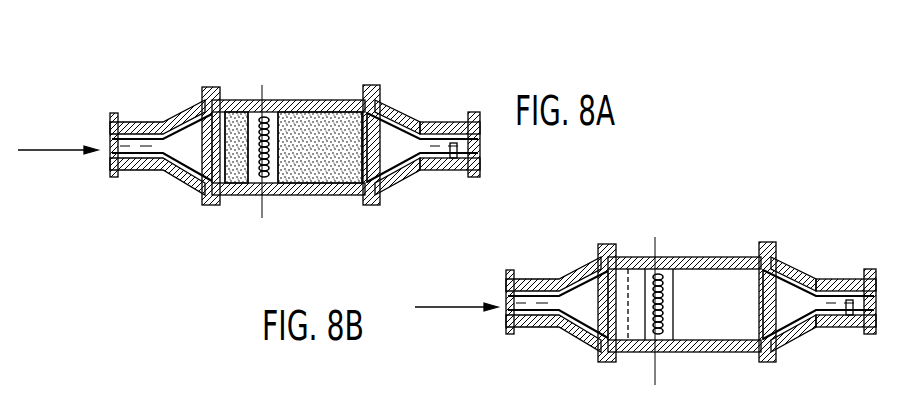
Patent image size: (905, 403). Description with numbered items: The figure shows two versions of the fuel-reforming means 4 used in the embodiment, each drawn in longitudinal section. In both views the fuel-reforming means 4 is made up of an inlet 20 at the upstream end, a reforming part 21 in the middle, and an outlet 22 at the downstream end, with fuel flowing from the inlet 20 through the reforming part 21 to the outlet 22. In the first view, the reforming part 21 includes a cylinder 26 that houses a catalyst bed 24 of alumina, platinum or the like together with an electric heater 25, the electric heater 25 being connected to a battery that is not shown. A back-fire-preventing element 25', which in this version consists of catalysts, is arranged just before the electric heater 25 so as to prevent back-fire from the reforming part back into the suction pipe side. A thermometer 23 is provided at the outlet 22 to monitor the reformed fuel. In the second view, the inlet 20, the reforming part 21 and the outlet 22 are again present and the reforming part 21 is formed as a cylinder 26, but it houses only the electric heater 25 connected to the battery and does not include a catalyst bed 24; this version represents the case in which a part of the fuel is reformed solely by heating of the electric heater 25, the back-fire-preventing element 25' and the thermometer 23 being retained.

In FIG. 8A, the fuel-reforming means 4 is at (243, 76).
In FIG. 8B, the fuel-reforming means 4 is at (638, 296).
In FIG. 8A, the inlet 20 is at (150, 176).
In FIG. 8B, the inlet 20 is at (557, 309).
In FIG. 8A, the reforming part 21 is at (308, 198).
In FIG. 8B, the reforming part 21 is at (679, 315).
In FIG. 8A, the outlet 22 is at (392, 185).
In FIG. 8B, the outlet 22 is at (819, 309).
In FIG. 8A, the thermometer 23 is at (452, 170).
In FIG. 8B, the thermometer 23 is at (860, 328).
In FIG. 8A, the catalyst bed 24 is at (330, 113).
In FIG. 8A, the electric heater 25 is at (263, 179).
In FIG. 8B, the electric heater 25 is at (663, 335).
In FIG. 8A, the back-fire-preventing element 25' is at (232, 169).
In FIG. 8B, the back-fire-preventing element 25' is at (642, 329).
In FIG. 8A, the cylinder 26 is at (358, 196).
In FIG. 8B, the cylinder 26 is at (748, 314).